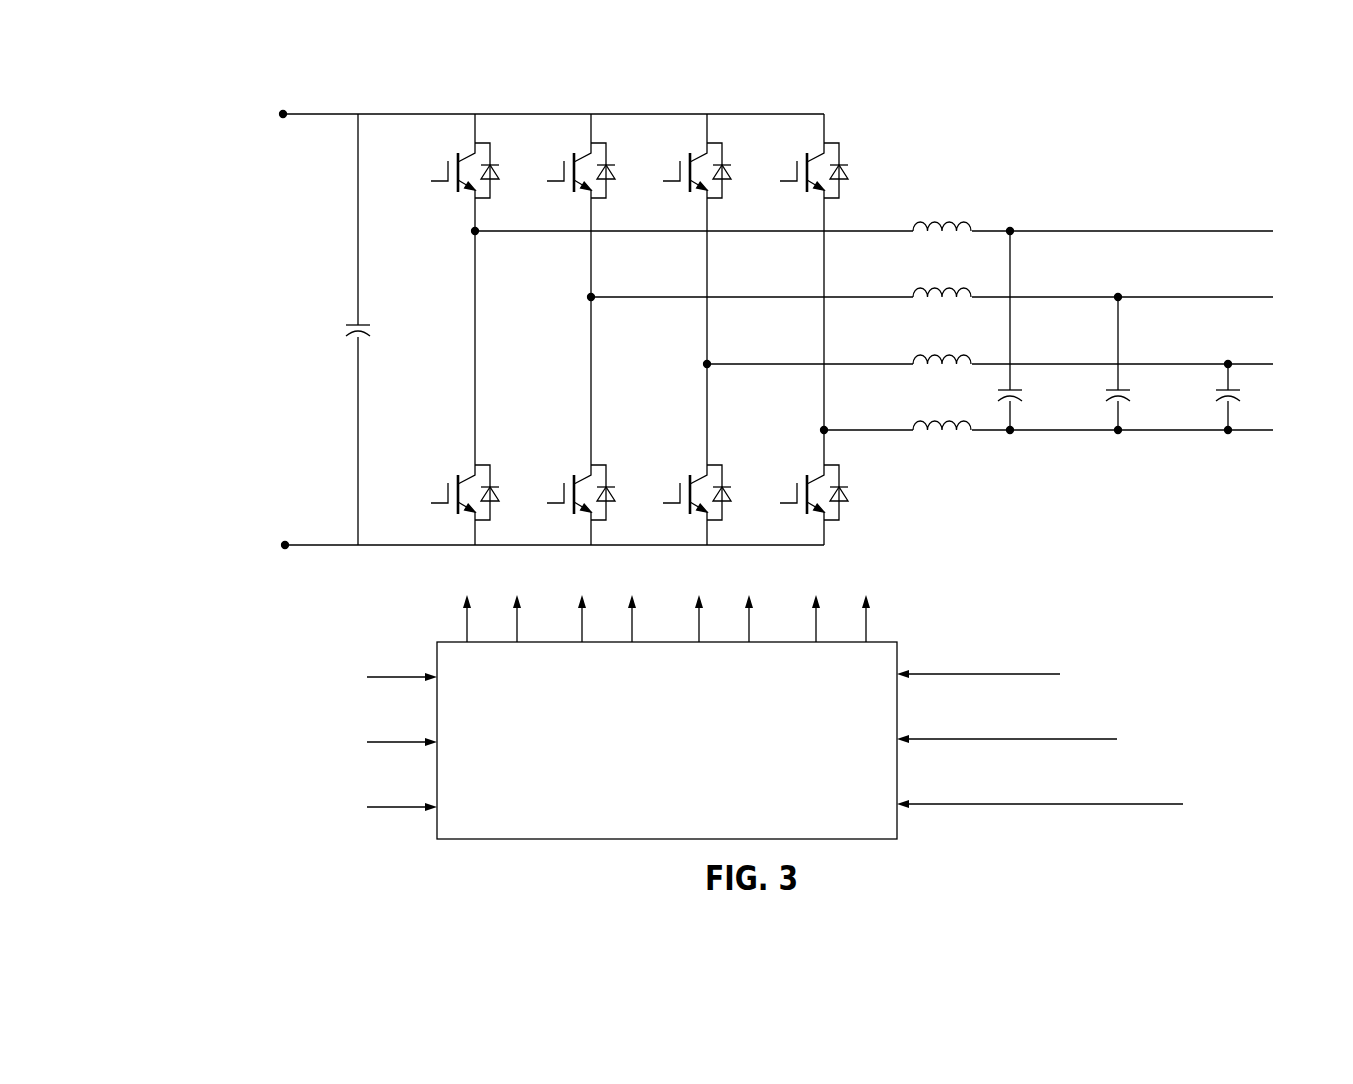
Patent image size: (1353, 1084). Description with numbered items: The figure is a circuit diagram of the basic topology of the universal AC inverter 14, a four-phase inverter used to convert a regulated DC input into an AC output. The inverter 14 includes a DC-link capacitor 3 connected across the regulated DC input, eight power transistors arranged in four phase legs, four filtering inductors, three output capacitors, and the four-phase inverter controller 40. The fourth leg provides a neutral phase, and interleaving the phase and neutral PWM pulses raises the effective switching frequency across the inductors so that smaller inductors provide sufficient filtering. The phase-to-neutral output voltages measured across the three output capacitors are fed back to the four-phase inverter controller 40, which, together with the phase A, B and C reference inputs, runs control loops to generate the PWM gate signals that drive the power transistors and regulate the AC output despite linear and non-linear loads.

The universal AC inverter 14 is at (208, 153).
The four-phase inverter controller 40 is at (445, 642).
The DC link capacitor C3 3 is at (344, 329).